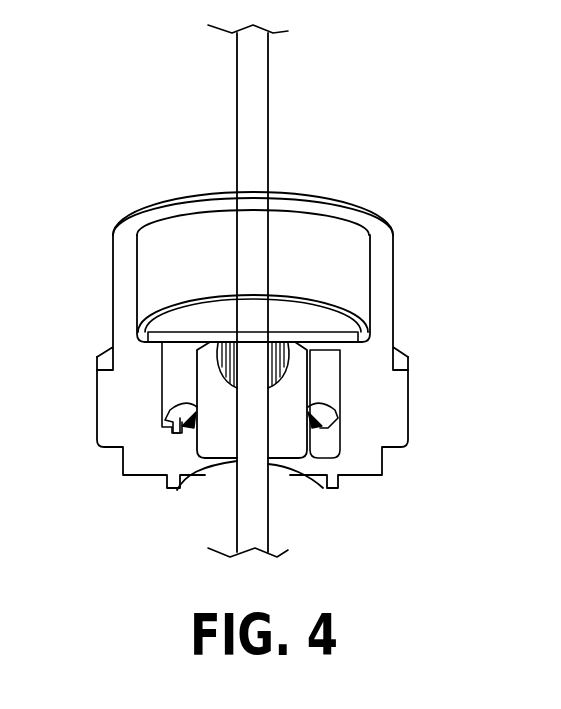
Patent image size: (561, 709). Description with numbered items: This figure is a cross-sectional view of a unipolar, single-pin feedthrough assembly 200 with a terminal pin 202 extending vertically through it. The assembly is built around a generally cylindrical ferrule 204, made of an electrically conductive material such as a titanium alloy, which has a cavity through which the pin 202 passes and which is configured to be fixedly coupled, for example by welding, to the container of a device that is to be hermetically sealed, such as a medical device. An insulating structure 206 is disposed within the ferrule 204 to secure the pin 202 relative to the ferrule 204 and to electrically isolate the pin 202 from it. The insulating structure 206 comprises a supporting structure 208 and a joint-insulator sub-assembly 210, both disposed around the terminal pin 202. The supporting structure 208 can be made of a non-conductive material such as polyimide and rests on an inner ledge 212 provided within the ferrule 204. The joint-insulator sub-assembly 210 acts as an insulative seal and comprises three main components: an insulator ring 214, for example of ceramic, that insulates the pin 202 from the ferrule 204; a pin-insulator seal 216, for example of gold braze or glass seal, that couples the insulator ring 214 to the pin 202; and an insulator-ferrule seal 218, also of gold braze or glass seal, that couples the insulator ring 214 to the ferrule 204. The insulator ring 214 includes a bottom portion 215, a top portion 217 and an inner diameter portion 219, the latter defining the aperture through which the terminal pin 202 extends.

The feedthrough assembly 200 is at (407, 192).
The terminal pin 202 is at (268, 110).
The ferrule 204 is at (383, 268).
The insulating structure 206 is at (134, 351).
The supporting structure 208 is at (342, 328).
The joint-insulator sub-assembly 210 is at (338, 411).
The inner ledge 212 is at (363, 340).
The insulator ring 214 is at (233, 440).
The bottom portion 215 is at (293, 462).
The pin-insulator seal 216 is at (227, 352).
The top portion 217 is at (296, 350).
The insulator-ferrule seal 218 is at (160, 422).
The inner diameter portion 219 is at (177, 490).